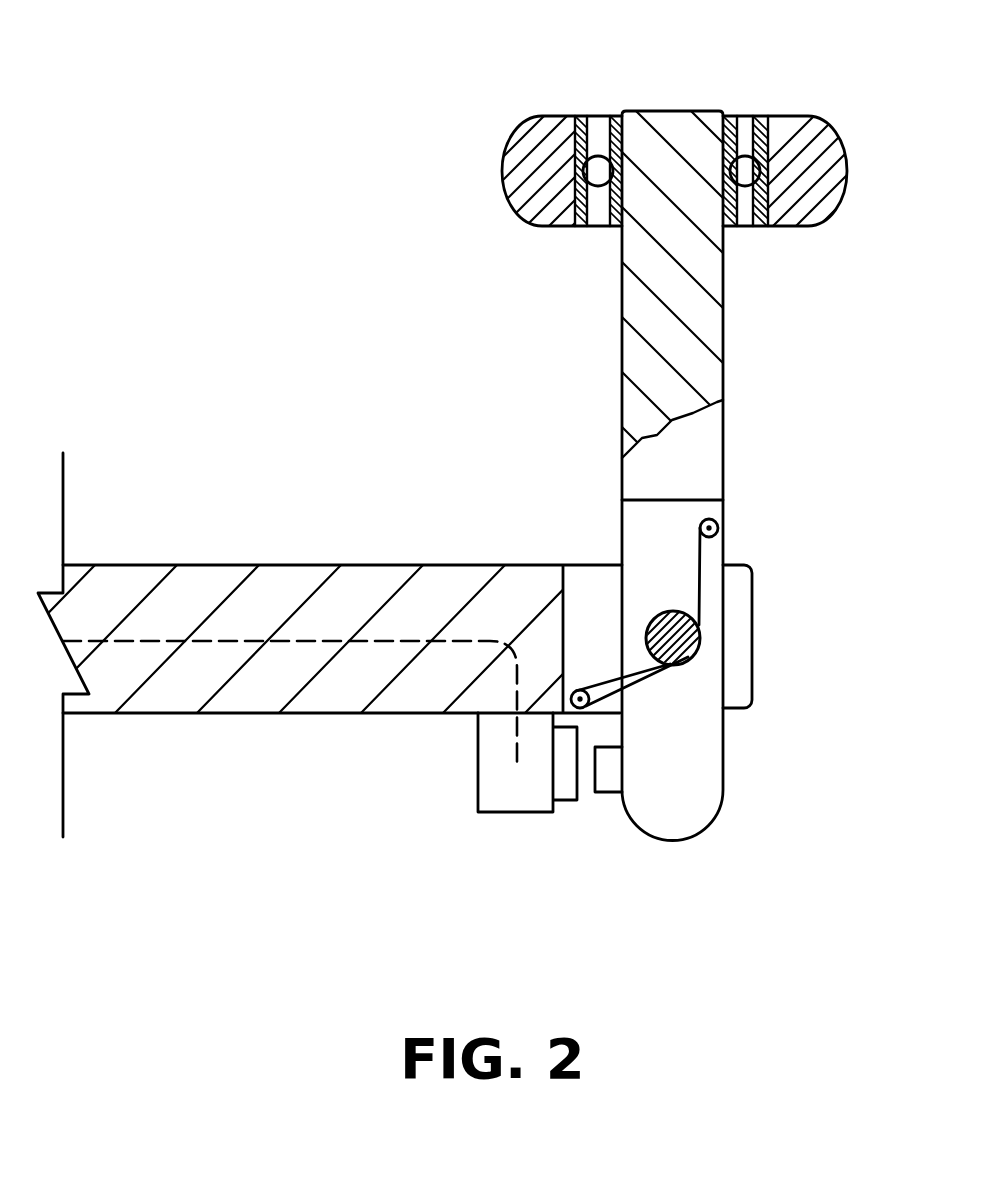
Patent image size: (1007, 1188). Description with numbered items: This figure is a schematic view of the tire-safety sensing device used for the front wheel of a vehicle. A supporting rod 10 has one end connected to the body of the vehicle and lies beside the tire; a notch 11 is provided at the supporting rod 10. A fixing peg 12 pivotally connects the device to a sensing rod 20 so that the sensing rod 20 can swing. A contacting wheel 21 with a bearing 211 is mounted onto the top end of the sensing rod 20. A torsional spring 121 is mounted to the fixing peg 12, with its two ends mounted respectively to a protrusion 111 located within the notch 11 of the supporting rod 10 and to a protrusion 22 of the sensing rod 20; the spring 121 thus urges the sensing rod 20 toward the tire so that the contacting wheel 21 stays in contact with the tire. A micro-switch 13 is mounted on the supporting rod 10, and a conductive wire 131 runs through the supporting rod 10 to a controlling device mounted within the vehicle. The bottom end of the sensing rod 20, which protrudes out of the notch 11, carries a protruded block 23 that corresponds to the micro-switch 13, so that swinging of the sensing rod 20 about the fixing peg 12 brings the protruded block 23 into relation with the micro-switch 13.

The supporting rod 10 is at (268, 692).
The conductive wire 131 is at (340, 632).
The micro-switch 13 is at (517, 790).
The protrusion 111 is at (585, 715).
The spring 121 is at (673, 665).
The protruded block 23 is at (608, 787).
The sensing rod 20 is at (708, 438).
The contacting wheel 21 is at (818, 197).
The bearing 211 is at (763, 117).
The protrusion 22 is at (718, 532).
The fixing peg 12 is at (690, 657).
The notch 11 is at (737, 628).